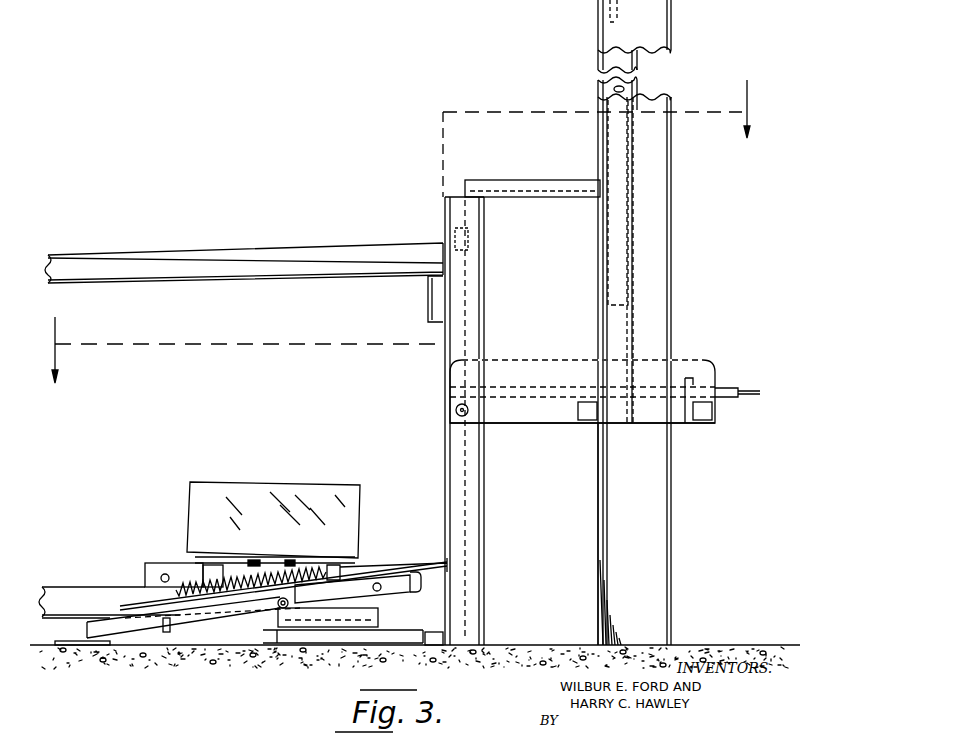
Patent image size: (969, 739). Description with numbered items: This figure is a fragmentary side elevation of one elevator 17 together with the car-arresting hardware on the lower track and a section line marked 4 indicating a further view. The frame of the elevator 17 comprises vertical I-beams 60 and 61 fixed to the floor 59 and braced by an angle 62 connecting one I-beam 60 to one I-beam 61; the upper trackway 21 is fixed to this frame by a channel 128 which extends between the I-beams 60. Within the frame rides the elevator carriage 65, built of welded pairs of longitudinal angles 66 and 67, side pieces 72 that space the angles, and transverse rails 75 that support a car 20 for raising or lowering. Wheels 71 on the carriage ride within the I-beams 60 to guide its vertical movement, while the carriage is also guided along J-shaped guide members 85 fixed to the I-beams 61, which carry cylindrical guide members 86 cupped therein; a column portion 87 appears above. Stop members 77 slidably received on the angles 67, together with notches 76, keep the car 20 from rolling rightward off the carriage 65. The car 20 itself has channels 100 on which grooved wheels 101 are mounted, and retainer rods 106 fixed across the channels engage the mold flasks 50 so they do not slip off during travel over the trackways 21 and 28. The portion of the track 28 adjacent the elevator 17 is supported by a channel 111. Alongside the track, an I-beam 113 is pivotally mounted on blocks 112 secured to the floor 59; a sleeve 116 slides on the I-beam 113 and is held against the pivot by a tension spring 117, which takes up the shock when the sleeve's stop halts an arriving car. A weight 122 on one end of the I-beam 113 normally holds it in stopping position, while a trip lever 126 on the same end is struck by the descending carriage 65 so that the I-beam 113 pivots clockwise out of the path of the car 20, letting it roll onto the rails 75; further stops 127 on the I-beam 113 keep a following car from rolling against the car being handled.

The section line 4- 4 is at (398, 231).
The elevator 17 is at (679, 153).
The car 20 is at (364, 563).
The trackway 21 is at (334, 250).
The track 28 is at (83, 588).
The mold flask 50 is at (312, 490).
The floor 59 is at (728, 645).
The vertical I-beam 60 is at (470, 553).
The vertical I-beam 61 is at (615, 532).
The angle 62 is at (520, 180).
The elevator carriage 65 is at (542, 357).
The angle 66 is at (586, 422).
The angle 67 is at (705, 422).
The wheel 71 is at (471, 413).
The side piece 72 is at (530, 425).
The rail 75 is at (750, 392).
The notch 76 is at (721, 388).
The stop member 77 is at (693, 378).
The J-shaped guide member 85 is at (633, 150).
The cylindrical guide member 86 is at (622, 231).
The column section 87 is at (640, 62).
The channel 100 is at (155, 565).
The wheel 101 is at (160, 592).
The rod 106 is at (300, 560).
The channel 111 is at (425, 650).
The block 112 is at (277, 607).
The I-beam 113 is at (218, 615).
The sleeve 116 is at (330, 600).
The tension spring 117 is at (232, 590).
The weight 122 is at (103, 645).
The trip lever 126 is at (425, 568).
The stop 127 is at (148, 638).
The channel 128 is at (428, 320).